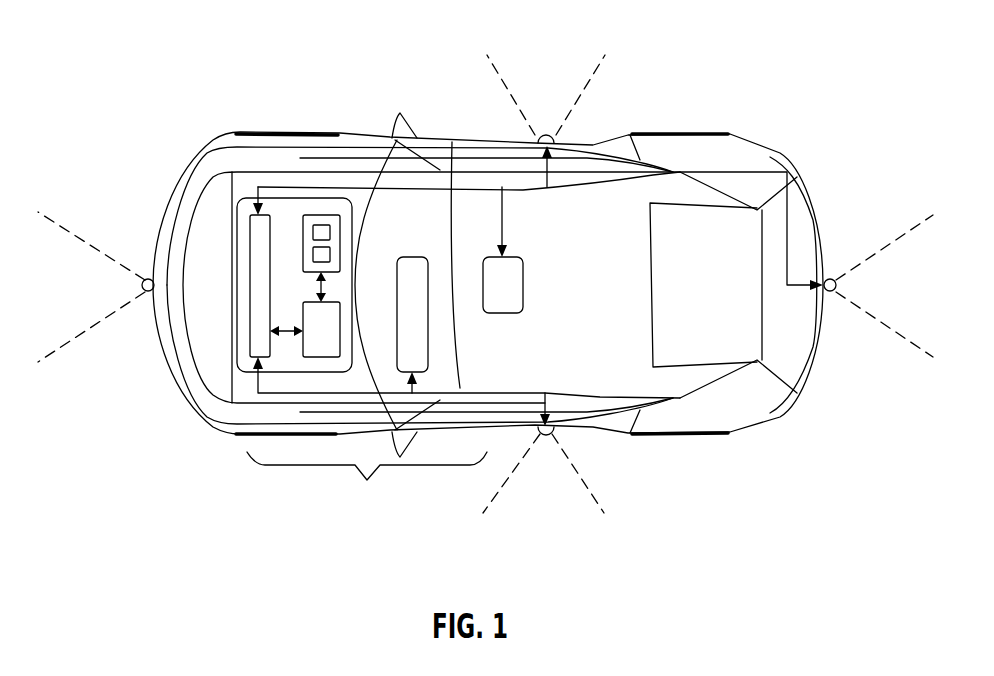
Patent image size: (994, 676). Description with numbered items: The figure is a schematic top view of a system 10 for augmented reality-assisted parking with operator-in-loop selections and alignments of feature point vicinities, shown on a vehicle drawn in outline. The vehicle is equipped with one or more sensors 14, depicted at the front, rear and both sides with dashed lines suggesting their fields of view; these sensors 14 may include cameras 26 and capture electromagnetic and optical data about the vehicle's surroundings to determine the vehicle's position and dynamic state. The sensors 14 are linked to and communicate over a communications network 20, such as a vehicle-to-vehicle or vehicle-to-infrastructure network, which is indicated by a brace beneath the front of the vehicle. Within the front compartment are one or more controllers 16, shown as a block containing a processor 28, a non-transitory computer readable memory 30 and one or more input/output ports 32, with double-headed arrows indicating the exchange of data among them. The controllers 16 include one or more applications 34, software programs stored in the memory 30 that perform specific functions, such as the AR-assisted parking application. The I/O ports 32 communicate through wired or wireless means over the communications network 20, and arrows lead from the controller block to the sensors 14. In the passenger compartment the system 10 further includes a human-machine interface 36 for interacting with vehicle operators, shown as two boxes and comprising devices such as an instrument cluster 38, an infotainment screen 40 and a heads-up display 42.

The system 10 is at (152, 64).
The sensors 14 is at (485, 284).
The controllers 16 is at (245, 194).
The communications network 20 is at (367, 484).
The cameras 26 is at (559, 137).
The processor 28 is at (335, 342).
The memory 30 is at (322, 178).
The input/output ports 32 is at (250, 235).
The application 34 is at (330, 253).
The human-machine interface 36 is at (508, 229).
The instrument cluster 38 is at (551, 313).
The infotainment screen 40 is at (523, 287).
The heads-up display 42 is at (417, 256).